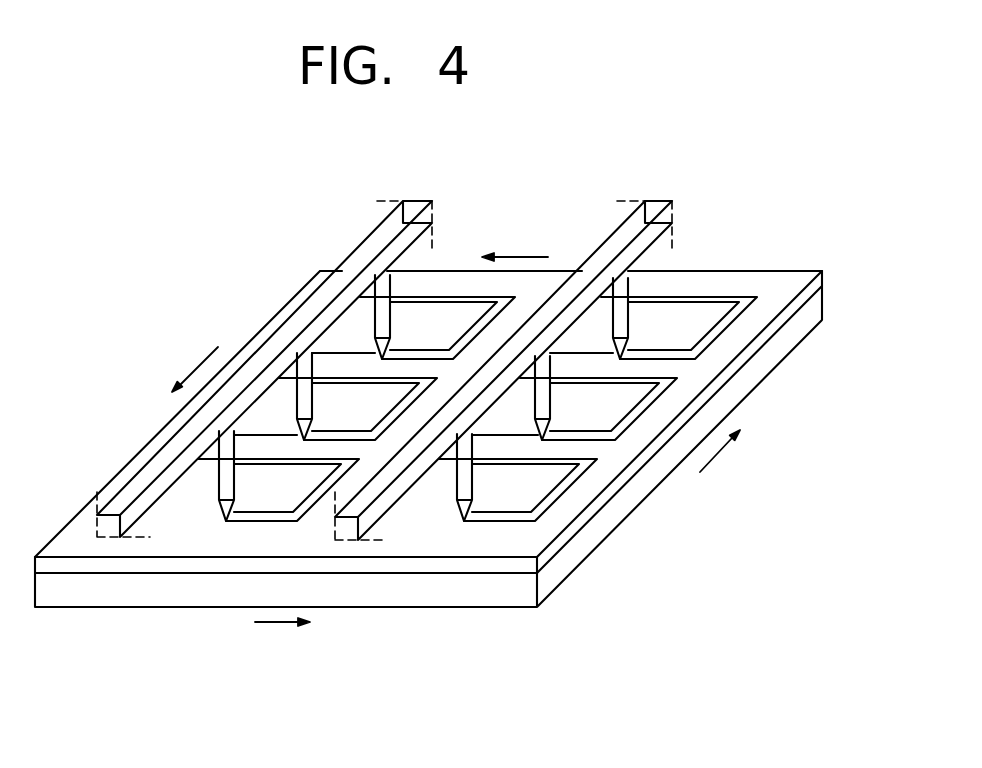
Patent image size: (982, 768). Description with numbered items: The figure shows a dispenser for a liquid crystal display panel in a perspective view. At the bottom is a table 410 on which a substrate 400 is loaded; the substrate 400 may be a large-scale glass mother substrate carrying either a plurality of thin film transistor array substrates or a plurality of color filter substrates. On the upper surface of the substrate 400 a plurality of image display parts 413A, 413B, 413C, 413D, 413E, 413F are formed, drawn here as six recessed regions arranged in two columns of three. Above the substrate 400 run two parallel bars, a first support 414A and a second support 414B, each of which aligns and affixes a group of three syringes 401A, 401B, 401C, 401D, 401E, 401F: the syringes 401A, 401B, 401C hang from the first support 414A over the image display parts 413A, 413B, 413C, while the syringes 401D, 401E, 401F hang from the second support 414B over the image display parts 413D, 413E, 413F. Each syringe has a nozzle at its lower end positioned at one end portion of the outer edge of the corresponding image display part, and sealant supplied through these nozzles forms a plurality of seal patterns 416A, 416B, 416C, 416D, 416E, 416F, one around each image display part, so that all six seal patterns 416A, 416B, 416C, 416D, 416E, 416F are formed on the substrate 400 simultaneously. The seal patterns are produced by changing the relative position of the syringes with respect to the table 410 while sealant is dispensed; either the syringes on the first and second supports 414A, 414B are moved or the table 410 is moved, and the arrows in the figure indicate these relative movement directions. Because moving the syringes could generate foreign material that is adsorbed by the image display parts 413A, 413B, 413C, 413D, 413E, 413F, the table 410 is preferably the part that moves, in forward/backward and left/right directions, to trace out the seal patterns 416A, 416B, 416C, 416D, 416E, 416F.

The substrate 400 is at (388, 565).
The table 410 is at (480, 597).
The image display part 413A is at (683, 333).
The image display part 413B is at (604, 415).
The image display part 413C is at (526, 496).
The image display part 413D is at (447, 335).
The image display part 413E is at (369, 418).
The image display part 413F is at (290, 497).
The seal pattern 416A is at (727, 327).
The seal pattern 416B is at (647, 406).
The seal pattern 416C is at (569, 488).
The seal pattern 416D is at (453, 297).
The seal pattern 416E is at (372, 377).
The seal pattern 416F is at (263, 521).
The syringe 401A is at (628, 287).
The syringe 401B is at (550, 410).
The syringe 401C is at (472, 490).
The syringe 401D is at (375, 317).
The syringe 401E is at (297, 372).
The syringe 401F is at (219, 473).
The first support 414A is at (617, 240).
The second support 414B is at (372, 245).